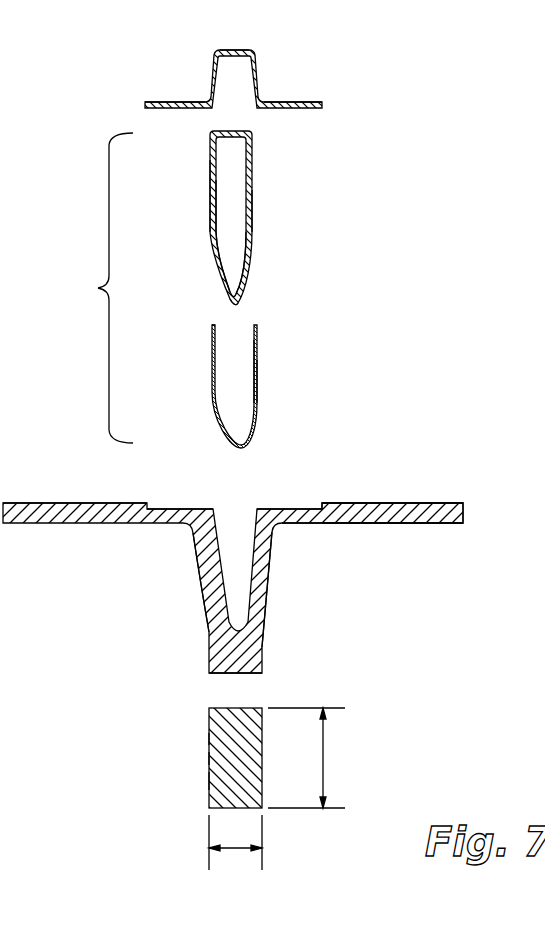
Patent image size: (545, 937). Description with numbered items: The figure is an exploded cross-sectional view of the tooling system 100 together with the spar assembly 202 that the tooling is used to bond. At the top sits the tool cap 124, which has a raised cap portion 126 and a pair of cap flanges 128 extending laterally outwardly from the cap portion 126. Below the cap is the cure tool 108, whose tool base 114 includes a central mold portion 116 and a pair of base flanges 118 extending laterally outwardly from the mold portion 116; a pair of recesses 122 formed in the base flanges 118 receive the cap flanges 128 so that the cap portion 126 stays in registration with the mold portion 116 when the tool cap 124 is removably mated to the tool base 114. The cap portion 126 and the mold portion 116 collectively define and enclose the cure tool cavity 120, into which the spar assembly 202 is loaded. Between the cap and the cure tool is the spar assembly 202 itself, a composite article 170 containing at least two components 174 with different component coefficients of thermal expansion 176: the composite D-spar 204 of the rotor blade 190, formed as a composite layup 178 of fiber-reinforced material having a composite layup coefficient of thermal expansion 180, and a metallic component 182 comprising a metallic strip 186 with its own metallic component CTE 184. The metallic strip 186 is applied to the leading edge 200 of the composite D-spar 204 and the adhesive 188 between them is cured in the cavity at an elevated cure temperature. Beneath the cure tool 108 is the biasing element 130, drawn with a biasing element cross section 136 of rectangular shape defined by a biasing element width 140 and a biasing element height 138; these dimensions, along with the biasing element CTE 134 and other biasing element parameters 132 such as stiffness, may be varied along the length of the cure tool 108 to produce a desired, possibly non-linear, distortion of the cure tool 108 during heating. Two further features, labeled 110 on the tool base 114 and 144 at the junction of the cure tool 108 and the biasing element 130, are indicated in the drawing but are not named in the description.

The tooling system 100 is at (465, 500).
The cure tool 108 is at (193, 582).
The plate portion 110 is at (440, 524).
The tool base 114 is at (398, 524).
The mold portion 116 is at (273, 582).
The base flanges 118 is at (50, 503).
The cure tool cavity 120 is at (239, 527).
The recesses 122 is at (152, 503).
The tool cap 124 is at (228, 49).
The cap portion 126 is at (258, 72).
The cap flanges 128 is at (167, 101).
The biasing element 130 is at (209, 715).
The biasing element parameter 132 is at (209, 738).
The biasing element CTE 134 is at (209, 758).
The biasing element cross section 136 is at (209, 778).
The biasing element height 138 is at (323, 752).
The biasing element width 140 is at (238, 847).
The interface 144 is at (245, 708).
The composite article 170 is at (164, 289).
The components 174 is at (212, 171).
The component coefficients of thermal expansion 176 is at (210, 188).
The composite layup 178 is at (252, 165).
The composite layup coefficient of thermal expansion 180 is at (252, 208).
The metallic component 182 is at (257, 348).
The metallic component CTE 184 is at (256, 376).
The metallic strip 186 is at (256, 404).
The adhesive 188 is at (216, 331).
The rotor blade 190 is at (218, 247).
The leading edge 200 is at (240, 303).
The spar assembly 202 is at (70, 288).
The composite D-spar 204 is at (250, 250).